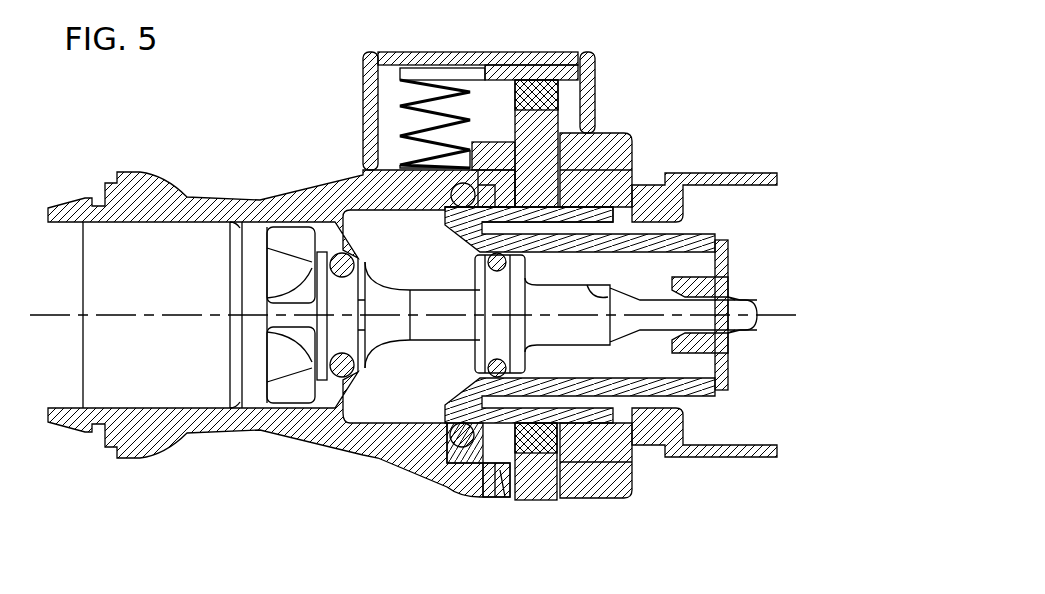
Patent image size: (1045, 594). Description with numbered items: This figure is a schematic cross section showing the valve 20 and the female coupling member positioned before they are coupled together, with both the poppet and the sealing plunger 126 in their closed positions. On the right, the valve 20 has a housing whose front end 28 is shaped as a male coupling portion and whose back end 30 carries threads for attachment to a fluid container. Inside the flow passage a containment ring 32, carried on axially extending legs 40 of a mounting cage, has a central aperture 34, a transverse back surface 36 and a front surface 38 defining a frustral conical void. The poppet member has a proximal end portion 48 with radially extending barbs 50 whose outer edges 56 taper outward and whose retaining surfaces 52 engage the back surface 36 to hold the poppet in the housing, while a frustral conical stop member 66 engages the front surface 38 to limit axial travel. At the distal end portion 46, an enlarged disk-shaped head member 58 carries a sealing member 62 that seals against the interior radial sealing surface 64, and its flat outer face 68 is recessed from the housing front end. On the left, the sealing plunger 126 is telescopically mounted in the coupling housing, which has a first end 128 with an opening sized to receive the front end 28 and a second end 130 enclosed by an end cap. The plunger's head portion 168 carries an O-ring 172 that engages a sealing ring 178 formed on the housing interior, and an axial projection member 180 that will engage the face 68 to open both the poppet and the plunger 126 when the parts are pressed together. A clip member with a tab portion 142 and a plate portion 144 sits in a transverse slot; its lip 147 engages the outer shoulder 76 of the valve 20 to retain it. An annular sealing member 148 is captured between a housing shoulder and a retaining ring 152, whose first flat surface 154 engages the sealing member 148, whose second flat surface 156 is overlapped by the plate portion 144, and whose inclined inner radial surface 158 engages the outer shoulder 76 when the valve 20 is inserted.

The valve 20 is at (190, 155).
The front end 28 is at (445, 228).
The back end 30 is at (778, 181).
The containment ring 32 is at (718, 272).
The central aperture 34 is at (665, 342).
The back surface 36 is at (733, 275).
The front surface 38 is at (668, 298).
The legs 40 is at (615, 245).
The distal end portion 46 is at (480, 262).
The proximal end portion 48 is at (760, 306).
The barbs 50 is at (738, 278).
The retaining surfaces 52 is at (735, 293).
The outer edges 56 is at (755, 298).
The head member 58 is at (478, 345).
The sealing member 62 is at (505, 372).
The interior radial sealing surface 64 is at (462, 380).
The stop member 66 is at (600, 297).
The flat outer face 68 is at (480, 280).
The outer shoulder 76 is at (628, 468).
The sealing plunger 126 is at (243, 408).
The first end 128 is at (628, 133).
The second end 130 is at (128, 457).
The tab portion 142 is at (470, 52).
The plate portion 144 is at (538, 487).
The lip 147 is at (585, 485).
The sealing member 148 is at (452, 437).
The retaining ring 152 is at (505, 470).
The first flat surface 154 is at (503, 470).
The second flat surface 156 is at (480, 445).
The inclined inner radial surface 158 is at (497, 462).
The head portion 168 is at (335, 262).
The O-ring 172 is at (343, 257).
The sealing ring 178 is at (283, 417).
The axial projection member 180 is at (388, 350).